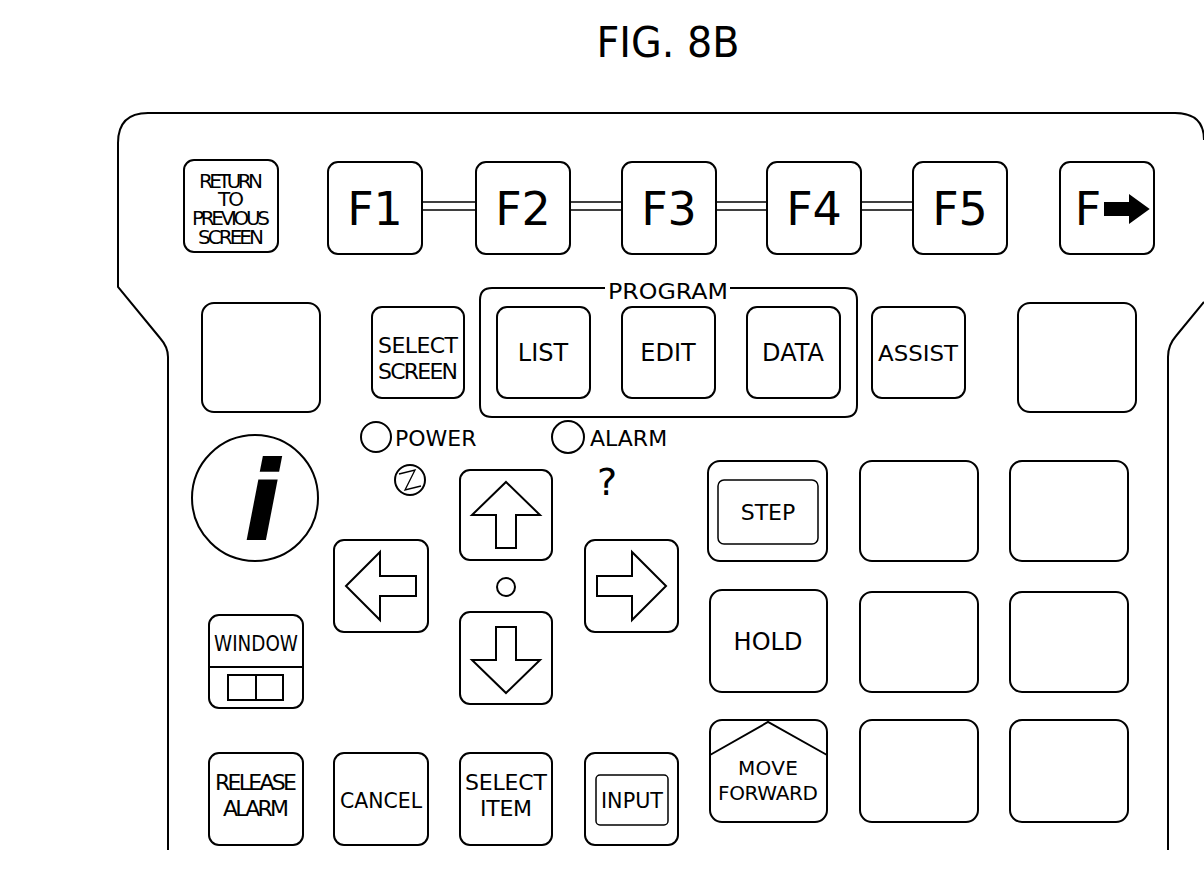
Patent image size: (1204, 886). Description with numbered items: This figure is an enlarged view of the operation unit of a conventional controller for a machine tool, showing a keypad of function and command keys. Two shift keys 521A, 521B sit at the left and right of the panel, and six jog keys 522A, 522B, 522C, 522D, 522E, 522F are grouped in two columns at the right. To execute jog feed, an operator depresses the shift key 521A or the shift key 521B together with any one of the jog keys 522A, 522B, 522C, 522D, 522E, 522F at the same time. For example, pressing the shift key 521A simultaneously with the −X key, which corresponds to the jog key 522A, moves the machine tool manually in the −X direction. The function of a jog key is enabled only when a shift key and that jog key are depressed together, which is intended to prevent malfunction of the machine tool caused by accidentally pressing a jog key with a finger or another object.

The shift key 521A is at (285, 340).
The shift key 521B is at (1098, 337).
The jog key 522A is at (924, 490).
The jog key 522B is at (1077, 490).
The jog key 522C is at (926, 629).
The jog key 522D is at (1076, 629).
The jog key 522E is at (921, 797).
The jog key 522F is at (1075, 797).